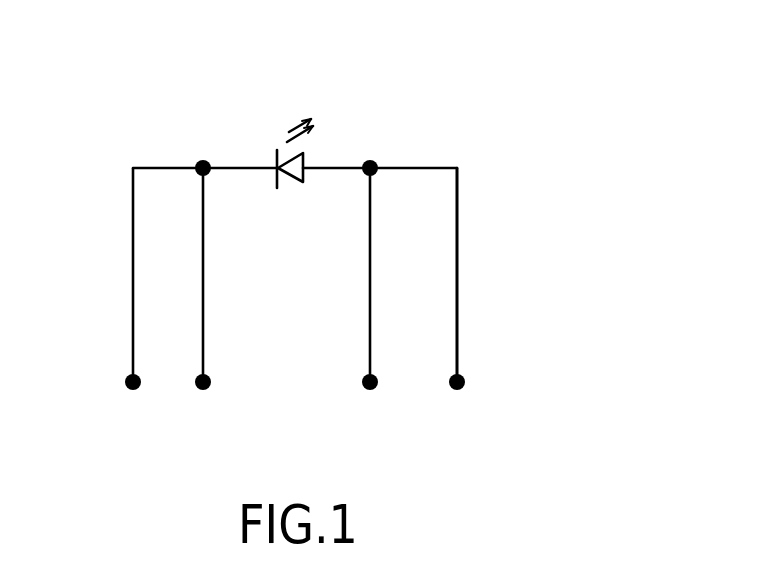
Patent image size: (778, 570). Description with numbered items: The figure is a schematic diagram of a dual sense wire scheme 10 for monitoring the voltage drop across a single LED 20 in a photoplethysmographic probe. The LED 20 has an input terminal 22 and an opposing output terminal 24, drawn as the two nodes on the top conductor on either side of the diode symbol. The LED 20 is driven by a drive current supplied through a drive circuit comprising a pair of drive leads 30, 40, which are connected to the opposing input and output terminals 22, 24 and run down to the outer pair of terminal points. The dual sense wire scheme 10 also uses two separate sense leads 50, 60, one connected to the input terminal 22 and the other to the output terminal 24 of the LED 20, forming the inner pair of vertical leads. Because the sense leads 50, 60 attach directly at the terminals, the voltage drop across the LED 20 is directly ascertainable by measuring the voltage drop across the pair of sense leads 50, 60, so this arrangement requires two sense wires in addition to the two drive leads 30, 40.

The dual sense wire scheme 10 is at (520, 125).
The LED 20 is at (292, 186).
The input terminal 22 is at (375, 160).
The output terminal 24 is at (203, 160).
The drive lead 30 is at (457, 247).
The drive lead 40 is at (133, 250).
The sense lead 50 is at (203, 300).
The sense lead 60 is at (370, 297).